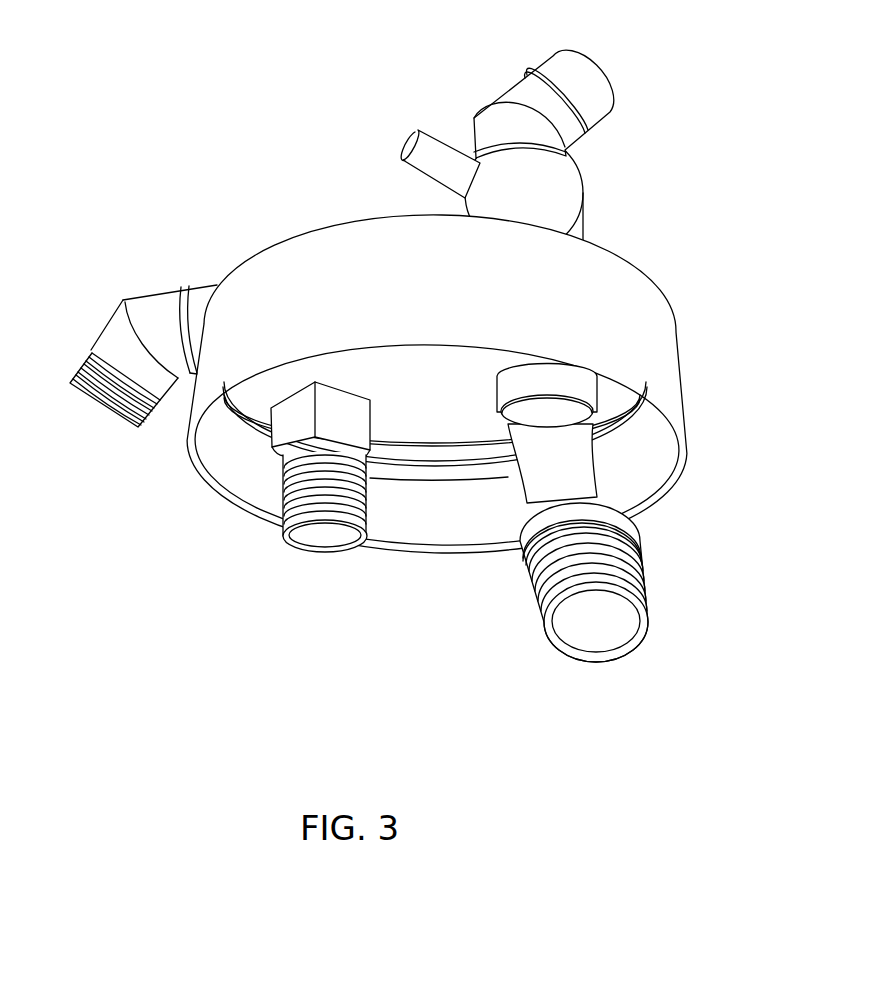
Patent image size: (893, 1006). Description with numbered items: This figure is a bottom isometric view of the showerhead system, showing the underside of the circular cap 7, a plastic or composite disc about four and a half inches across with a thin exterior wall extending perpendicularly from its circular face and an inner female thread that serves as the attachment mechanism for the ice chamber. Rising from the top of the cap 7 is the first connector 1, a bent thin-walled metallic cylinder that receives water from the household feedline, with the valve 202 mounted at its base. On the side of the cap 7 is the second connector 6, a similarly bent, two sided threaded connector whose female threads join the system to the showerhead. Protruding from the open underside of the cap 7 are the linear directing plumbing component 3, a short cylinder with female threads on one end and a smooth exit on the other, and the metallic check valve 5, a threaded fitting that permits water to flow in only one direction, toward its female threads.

The first connector 1 is at (577, 88).
The valve 202 is at (537, 193).
The linear directing plumbing component 3 is at (637, 568).
The metallic check valve 5 is at (312, 523).
The second connector 6 is at (163, 308).
The circular cap 7 is at (653, 338).